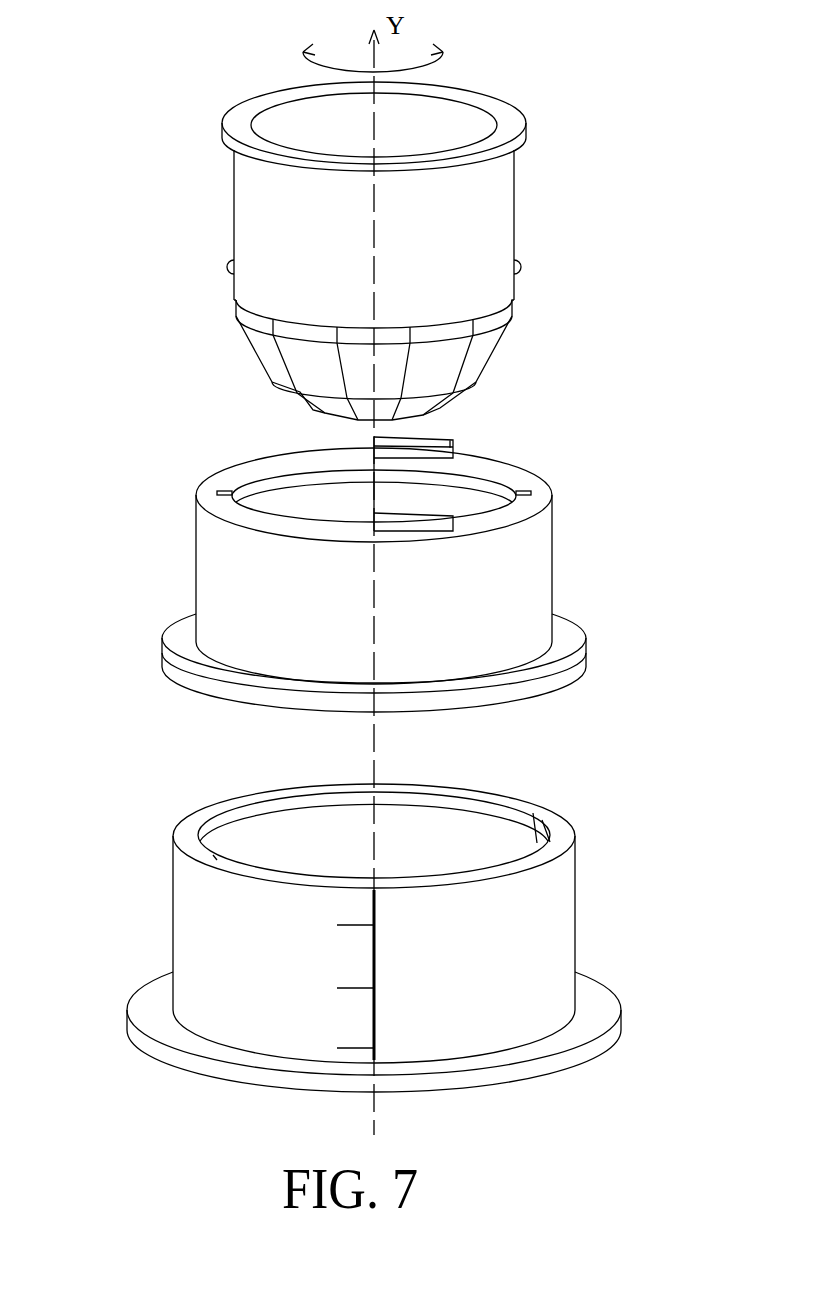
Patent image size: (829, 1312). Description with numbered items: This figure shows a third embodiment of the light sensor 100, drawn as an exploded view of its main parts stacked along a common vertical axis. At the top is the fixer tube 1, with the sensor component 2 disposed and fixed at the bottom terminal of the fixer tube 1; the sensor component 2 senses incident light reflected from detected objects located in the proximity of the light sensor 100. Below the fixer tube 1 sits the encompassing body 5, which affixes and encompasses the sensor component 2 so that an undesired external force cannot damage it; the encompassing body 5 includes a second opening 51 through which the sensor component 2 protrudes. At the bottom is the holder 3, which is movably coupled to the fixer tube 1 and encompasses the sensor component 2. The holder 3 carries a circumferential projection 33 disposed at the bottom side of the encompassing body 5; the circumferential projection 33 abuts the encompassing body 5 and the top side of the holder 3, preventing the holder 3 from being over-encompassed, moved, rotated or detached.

The light sensor 100 is at (140, 75).
The fixer tube 1 is at (448, 247).
The sensor component 2 is at (507, 330).
The holder 3 is at (478, 980).
The circumferential projection 33 is at (621, 1010).
The encompassing body 5 is at (447, 618).
The second opening 51 is at (376, 712).